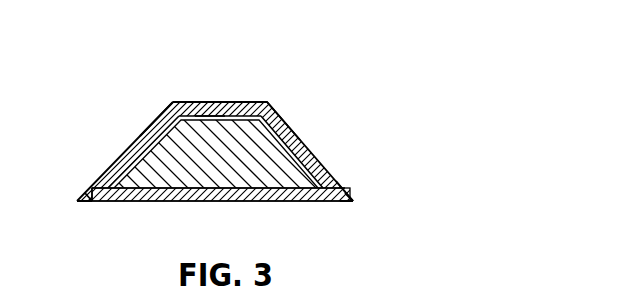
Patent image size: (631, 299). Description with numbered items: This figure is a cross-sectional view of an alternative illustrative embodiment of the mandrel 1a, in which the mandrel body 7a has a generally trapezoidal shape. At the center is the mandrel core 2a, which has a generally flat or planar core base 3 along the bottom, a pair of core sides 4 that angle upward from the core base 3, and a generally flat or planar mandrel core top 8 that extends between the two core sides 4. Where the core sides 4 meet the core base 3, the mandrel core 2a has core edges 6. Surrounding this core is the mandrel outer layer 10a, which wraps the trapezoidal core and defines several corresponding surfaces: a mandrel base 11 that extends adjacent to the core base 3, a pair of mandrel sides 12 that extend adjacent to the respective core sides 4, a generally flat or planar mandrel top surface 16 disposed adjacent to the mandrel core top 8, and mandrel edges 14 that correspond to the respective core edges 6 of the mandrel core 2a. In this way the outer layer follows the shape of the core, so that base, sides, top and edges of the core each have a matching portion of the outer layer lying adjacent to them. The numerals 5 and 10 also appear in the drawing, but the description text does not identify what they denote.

The mandrel 1a is at (297, 66).
The mandrel core 2a is at (302, 142).
The core base 3 is at (173, 202).
The core sides 4 is at (138, 152).
The component 5 is at (1, 84).
The core edges 6 is at (89, 202).
The mandrel body 7a is at (180, 83).
The mandrel core top 8 is at (207, 117).
The component 10 is at (0, 1).
The mandrel outer layer 10a is at (359, 182).
The mandrel base 11 is at (238, 202).
The mandrel sides 12 is at (148, 128).
The mandrel edges 14 is at (0, 60).
The mandrel top surface 16 is at (240, 101).